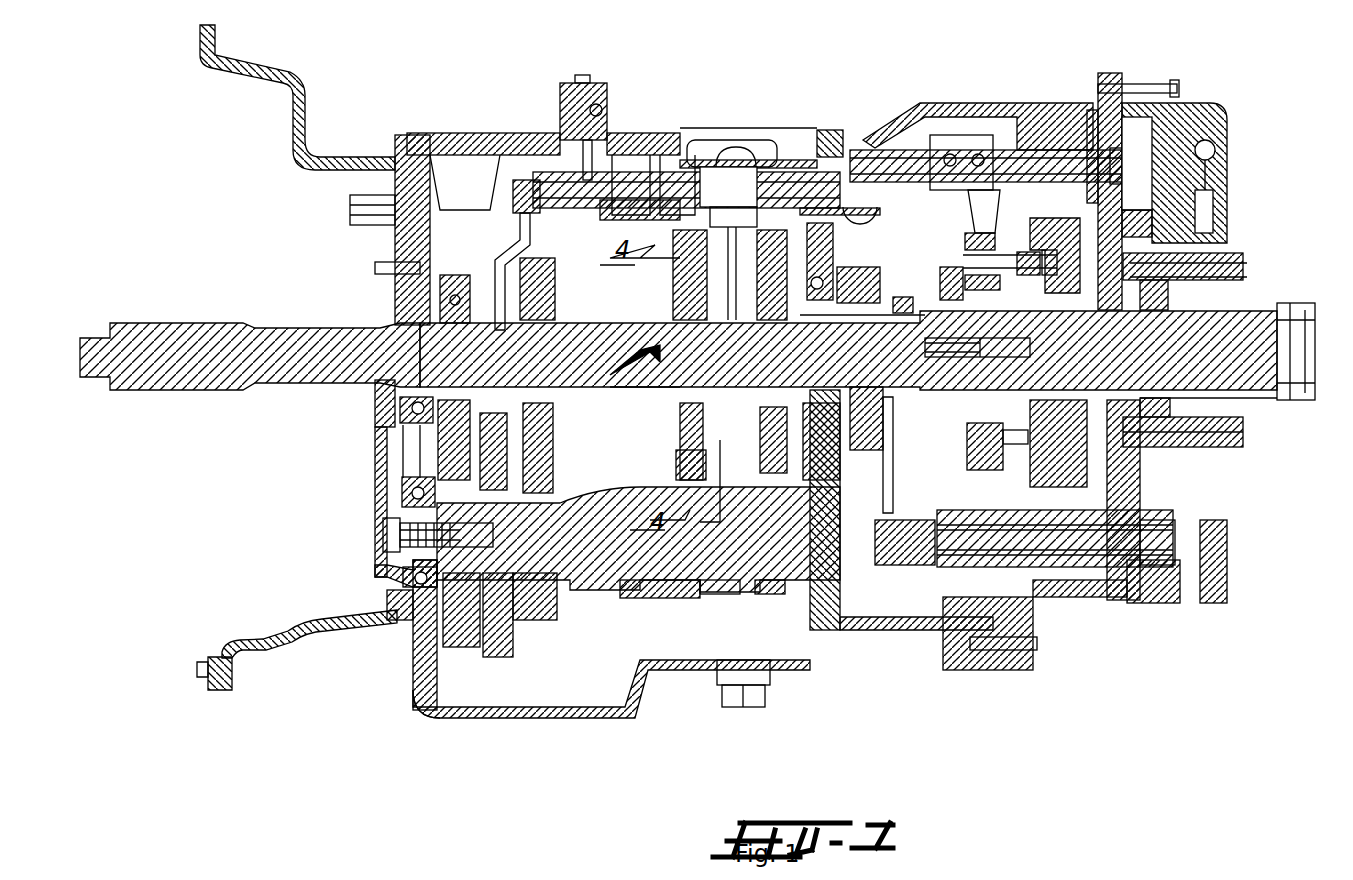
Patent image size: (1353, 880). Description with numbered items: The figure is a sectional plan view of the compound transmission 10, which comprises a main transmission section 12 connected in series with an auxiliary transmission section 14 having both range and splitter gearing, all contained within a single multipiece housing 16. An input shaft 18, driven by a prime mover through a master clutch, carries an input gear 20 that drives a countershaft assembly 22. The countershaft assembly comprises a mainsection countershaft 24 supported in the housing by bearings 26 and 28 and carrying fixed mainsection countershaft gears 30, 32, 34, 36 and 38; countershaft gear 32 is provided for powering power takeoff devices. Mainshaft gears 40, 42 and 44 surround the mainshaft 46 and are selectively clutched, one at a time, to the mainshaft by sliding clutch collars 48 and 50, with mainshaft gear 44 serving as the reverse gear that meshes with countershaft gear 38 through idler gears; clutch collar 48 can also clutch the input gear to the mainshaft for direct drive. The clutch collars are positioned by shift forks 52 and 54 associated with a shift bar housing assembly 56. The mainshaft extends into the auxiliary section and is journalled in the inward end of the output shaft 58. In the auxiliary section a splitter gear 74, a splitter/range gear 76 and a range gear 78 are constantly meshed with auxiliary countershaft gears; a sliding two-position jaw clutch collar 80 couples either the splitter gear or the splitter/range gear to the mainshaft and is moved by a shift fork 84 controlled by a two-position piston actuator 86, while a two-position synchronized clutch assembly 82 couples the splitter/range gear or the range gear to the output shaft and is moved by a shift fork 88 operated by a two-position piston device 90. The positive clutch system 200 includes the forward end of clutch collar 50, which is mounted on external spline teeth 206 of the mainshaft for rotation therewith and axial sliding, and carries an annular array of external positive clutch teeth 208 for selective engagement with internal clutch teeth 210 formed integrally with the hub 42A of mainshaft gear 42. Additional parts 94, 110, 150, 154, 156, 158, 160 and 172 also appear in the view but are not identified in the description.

The compound transmission 10 is at (813, 105).
The main transmission section 12 is at (808, 730).
The auxiliary transmission section 14 is at (1257, 730).
The multipiece housing 16 is at (413, 662).
The input shaft 18 is at (185, 335).
The input gear 20 is at (455, 275).
The countershaft assembly 22 is at (625, 593).
The mainsection countershaft 24 is at (722, 596).
The bearing 26 is at (400, 493).
The bearing 28 is at (840, 600).
The mainsection countershaft gear 30 is at (462, 650).
The mainsection countershaft gear 32 is at (500, 658).
The mainsection countershaft gear 34 is at (535, 622).
The mainsection countershaft gear 36 is at (665, 600).
The mainsection countershaft gear 38 is at (770, 596).
The mainshaft gear 40 is at (555, 438).
The mainshaft gear 42 is at (676, 460).
The hub 42A is at (672, 300).
The mainshaft gear 44 is at (760, 440).
The mainshaft 46 is at (660, 367).
The sliding clutch collar 48 is at (520, 410).
The sliding clutch collar 50 is at (740, 440).
The shift fork 52 is at (530, 225).
The shift fork 54 is at (745, 260).
The shift bar housing assembly 56 is at (462, 132).
The output shaft 58 is at (1245, 325).
The splitter gear 74 is at (860, 430).
The splitter/range gear 76 is at (967, 445).
The range gear 78 is at (1050, 487).
The sliding two-position jaw clutch collar 80 is at (906, 288).
The two-position synchronized clutch assembly 82 is at (998, 462).
The shift fork 84 is at (895, 510).
The two-position piston actuator 86 is at (1195, 605).
The shift fork 88 is at (995, 210).
The two-position piston device 90 is at (1060, 115).
The front wall 94 is at (418, 135).
The shift rail 110 is at (680, 150).
The interlock mechanism 150 is at (593, 82).
The shift yoke 154 is at (620, 222).
The shift rail 156 is at (622, 150).
The interlock pin 158 is at (605, 105).
The end cover 160 is at (1235, 125).
The shift rail 172 is at (535, 135).
The positive clutch system 200 is at (672, 382).
The external spline teeth 206 is at (590, 320).
The external positive clutch teeth 208 is at (740, 335).
The internal clutch teeth 210 is at (678, 420).